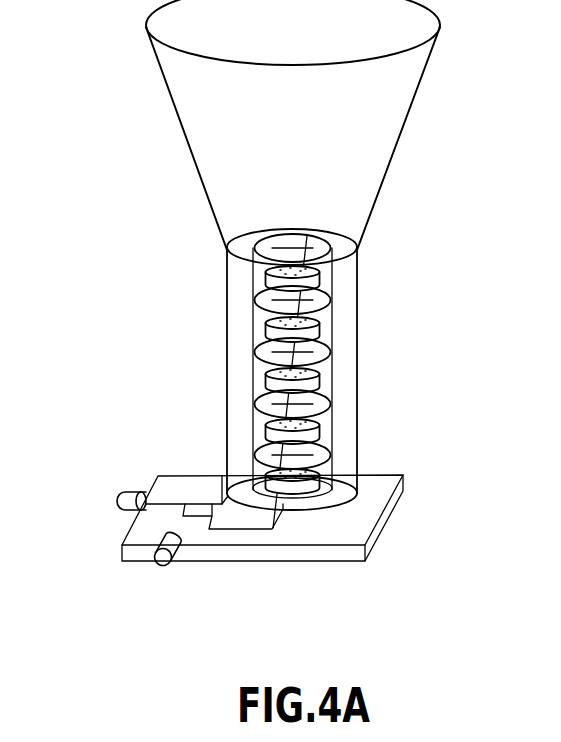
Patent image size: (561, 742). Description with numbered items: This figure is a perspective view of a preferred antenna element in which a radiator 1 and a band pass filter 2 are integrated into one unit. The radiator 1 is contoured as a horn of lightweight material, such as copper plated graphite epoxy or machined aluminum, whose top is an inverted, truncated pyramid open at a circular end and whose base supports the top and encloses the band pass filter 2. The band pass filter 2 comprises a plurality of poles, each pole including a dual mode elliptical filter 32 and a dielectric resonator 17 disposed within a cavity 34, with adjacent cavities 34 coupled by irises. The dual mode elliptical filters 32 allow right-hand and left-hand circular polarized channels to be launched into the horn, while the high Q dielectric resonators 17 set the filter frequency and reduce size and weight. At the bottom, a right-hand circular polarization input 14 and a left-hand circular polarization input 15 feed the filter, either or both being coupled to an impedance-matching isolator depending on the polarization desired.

The radiator 1 is at (193, 128).
The band pass filter 2 is at (237, 297).
The dielectric resonator 17 is at (318, 500).
The dual mode elliptical filter 32 is at (326, 378).
The cavity 34 is at (328, 440).
The right-hand circular polarization input 14 is at (120, 498).
The left-hand circular polarization input 15 is at (160, 557).